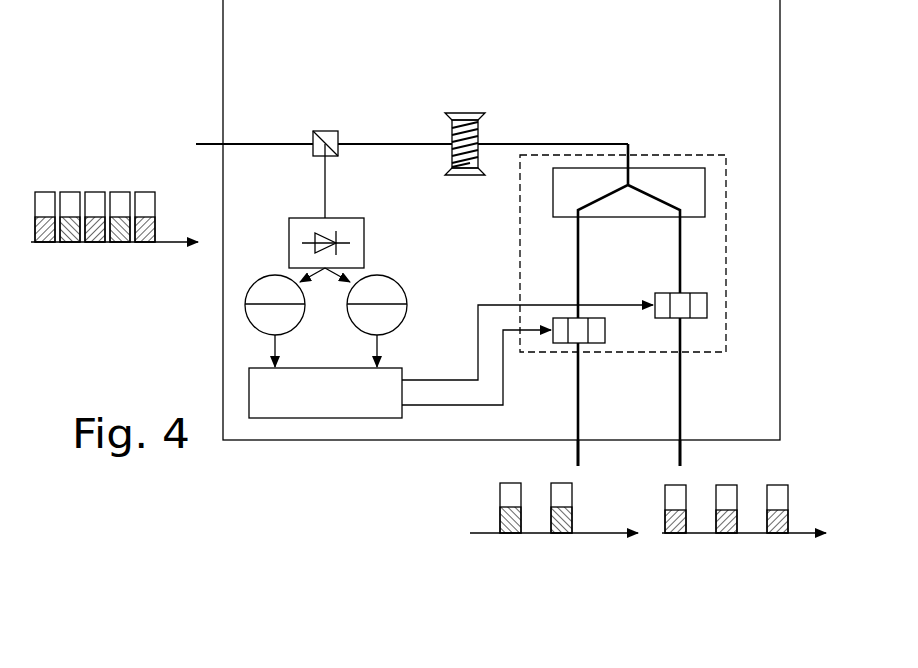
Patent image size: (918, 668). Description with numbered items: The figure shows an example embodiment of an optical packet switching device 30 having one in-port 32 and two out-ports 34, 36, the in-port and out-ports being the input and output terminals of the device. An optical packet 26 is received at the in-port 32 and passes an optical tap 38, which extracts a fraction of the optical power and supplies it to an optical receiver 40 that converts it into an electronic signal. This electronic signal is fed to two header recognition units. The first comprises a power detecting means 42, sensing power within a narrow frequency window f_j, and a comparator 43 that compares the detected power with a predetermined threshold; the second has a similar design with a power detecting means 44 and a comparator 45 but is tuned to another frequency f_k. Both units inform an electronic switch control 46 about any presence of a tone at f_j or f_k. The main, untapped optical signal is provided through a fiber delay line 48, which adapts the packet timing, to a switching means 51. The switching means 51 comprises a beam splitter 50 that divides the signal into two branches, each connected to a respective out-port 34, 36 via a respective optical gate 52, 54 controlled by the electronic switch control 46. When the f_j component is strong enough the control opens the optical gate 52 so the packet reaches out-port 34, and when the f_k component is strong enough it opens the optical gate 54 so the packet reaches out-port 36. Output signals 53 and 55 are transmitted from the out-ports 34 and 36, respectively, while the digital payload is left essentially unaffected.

The optical packet 26 is at (70, 243).
The switching device 30 is at (773, 42).
The in-port 32 is at (203, 142).
The out-port 34 is at (684, 425).
The out-port 36 is at (578, 418).
The optical tap 38 is at (330, 128).
The optical receiver 40 is at (360, 218).
The power detecting means 42 is at (247, 292).
The comparator 43 is at (252, 322).
The power detecting means 44 is at (390, 300).
The comparator 45 is at (392, 313).
The electronic switch control 46 is at (293, 410).
The fiber delay line 48 is at (466, 112).
The beam splitter 50 is at (697, 168).
The switching means 51 is at (727, 195).
The optical gate 52 is at (697, 318).
The output signal 53 is at (700, 535).
The optical gate 54 is at (596, 342).
The output signal 55 is at (510, 535).